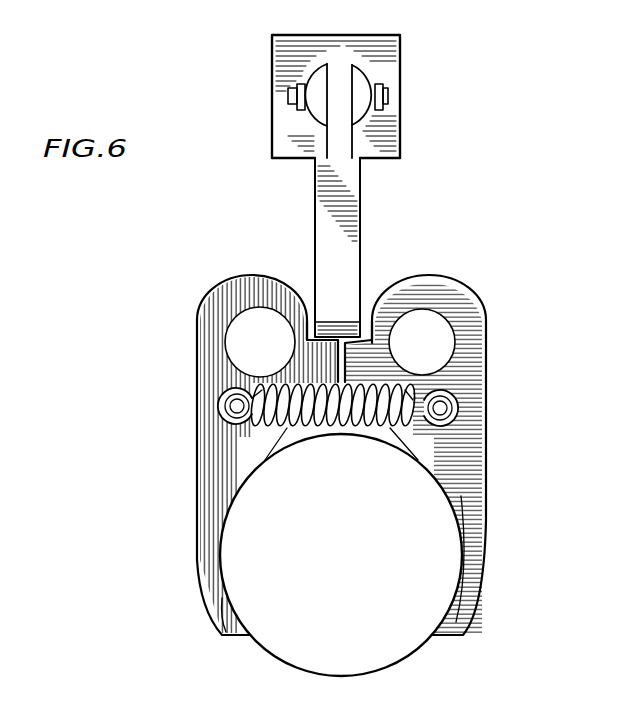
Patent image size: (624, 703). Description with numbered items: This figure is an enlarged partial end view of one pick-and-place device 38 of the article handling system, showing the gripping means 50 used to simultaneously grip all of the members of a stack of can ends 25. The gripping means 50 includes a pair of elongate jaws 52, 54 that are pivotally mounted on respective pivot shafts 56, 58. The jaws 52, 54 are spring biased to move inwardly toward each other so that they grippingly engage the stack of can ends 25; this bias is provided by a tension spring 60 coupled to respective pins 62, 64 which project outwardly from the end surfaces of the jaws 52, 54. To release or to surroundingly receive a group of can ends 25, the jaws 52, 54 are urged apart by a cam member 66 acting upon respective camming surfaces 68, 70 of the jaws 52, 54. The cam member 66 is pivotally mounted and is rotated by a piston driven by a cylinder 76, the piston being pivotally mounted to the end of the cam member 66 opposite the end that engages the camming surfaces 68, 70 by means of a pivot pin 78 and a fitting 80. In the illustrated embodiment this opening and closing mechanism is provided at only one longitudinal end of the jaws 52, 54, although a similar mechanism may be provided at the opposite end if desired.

The stack of can ends 25 is at (349, 602).
The pick-and-place device 38 is at (215, 230).
The gripping means 50 is at (178, 492).
The jaw 52 is at (197, 562).
The jaw 54 is at (483, 541).
The pivot shaft 56 is at (235, 338).
The pivot shaft 58 is at (432, 342).
The tension spring 60 is at (332, 432).
The pin 62 is at (237, 407).
The pin 64 is at (440, 408).
The cam member 66 is at (352, 173).
The camming surface 68 is at (313, 312).
The camming surface 70 is at (372, 318).
The cylinder 76 is at (390, 52).
The pivot pin 78 is at (388, 95).
The fitting 80 is at (318, 77).